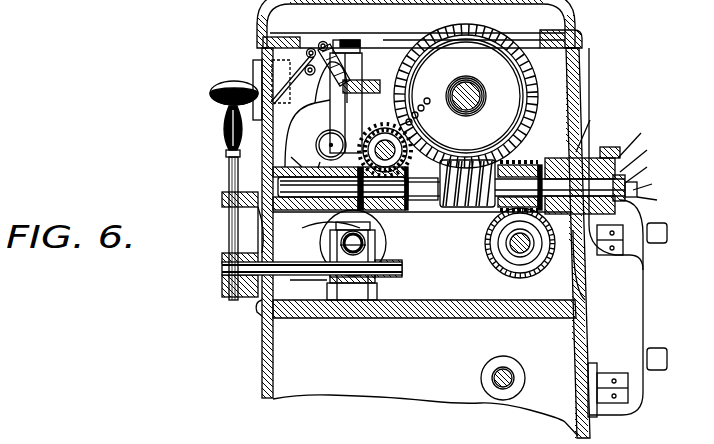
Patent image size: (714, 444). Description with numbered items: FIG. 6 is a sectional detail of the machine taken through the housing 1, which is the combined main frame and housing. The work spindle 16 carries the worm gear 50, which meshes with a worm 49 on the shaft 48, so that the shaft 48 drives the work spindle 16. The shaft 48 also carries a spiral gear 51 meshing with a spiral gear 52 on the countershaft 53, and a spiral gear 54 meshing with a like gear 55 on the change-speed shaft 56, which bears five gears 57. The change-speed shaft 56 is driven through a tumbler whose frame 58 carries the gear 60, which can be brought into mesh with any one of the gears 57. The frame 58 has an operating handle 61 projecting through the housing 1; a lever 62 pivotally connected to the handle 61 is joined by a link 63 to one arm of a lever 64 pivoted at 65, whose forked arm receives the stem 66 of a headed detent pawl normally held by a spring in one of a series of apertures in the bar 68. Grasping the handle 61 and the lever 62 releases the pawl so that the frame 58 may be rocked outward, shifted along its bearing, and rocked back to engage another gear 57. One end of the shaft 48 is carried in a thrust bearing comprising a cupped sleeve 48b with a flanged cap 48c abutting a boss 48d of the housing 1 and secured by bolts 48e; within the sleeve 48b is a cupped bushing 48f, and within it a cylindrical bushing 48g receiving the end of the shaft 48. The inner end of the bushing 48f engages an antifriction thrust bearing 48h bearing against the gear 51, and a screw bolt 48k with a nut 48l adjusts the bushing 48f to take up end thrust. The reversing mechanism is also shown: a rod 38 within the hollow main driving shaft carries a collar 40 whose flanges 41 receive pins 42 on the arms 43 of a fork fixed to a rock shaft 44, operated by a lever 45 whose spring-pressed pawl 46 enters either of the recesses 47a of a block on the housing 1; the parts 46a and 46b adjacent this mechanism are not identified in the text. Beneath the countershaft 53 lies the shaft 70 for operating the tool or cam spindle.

The combined main frame and housing 1 is at (262, 352).
The work spindle 16 is at (467, 112).
The rod 38 is at (348, 285).
The collar 40 is at (377, 280).
The flanges 41 is at (306, 290).
The pins 42 is at (340, 246).
The arms 43 is at (377, 248).
The rock shaft 44 is at (222, 272).
The operating lever 45 is at (226, 233).
The spring-pressed pawl 46 is at (262, 196).
The collar 46a is at (289, 158).
The collar 46b is at (319, 161).
The recesses 47a is at (321, 225).
The shaft 48 is at (460, 210).
The cupped sleeve 48b is at (590, 129).
The flanged cap 48c is at (641, 139).
The boss 48d is at (610, 148).
The bolts 48e is at (650, 244).
The cupped bushing 48f is at (644, 154).
The cylindrical bushing 48g is at (658, 200).
The antifriction thrust bearing 48h is at (520, 162).
The screw bolt 48k is at (654, 182).
The nut 48l is at (646, 169).
The worm 49 is at (470, 212).
The worm gear 50 is at (466, 96).
The spiral gear 51 is at (552, 164).
The spiral gear 52 is at (497, 262).
The countershaft 53 is at (517, 255).
The spiral gear 54 is at (412, 190).
The spiral gear 55 is at (452, 110).
The change-speed shaft 56 is at (448, 99).
The gears 57 is at (455, 88).
The tumbler frame 58 is at (315, 133).
The gear 60 is at (385, 130).
The operating handle 61 is at (242, 81).
The lever 62 is at (224, 110).
The link 63 is at (305, 68).
The lever 64 is at (326, 42).
The pivot 65 is at (312, 48).
The stem 66 is at (360, 44).
The bar 68 is at (366, 88).
The shaft 70 is at (508, 372).